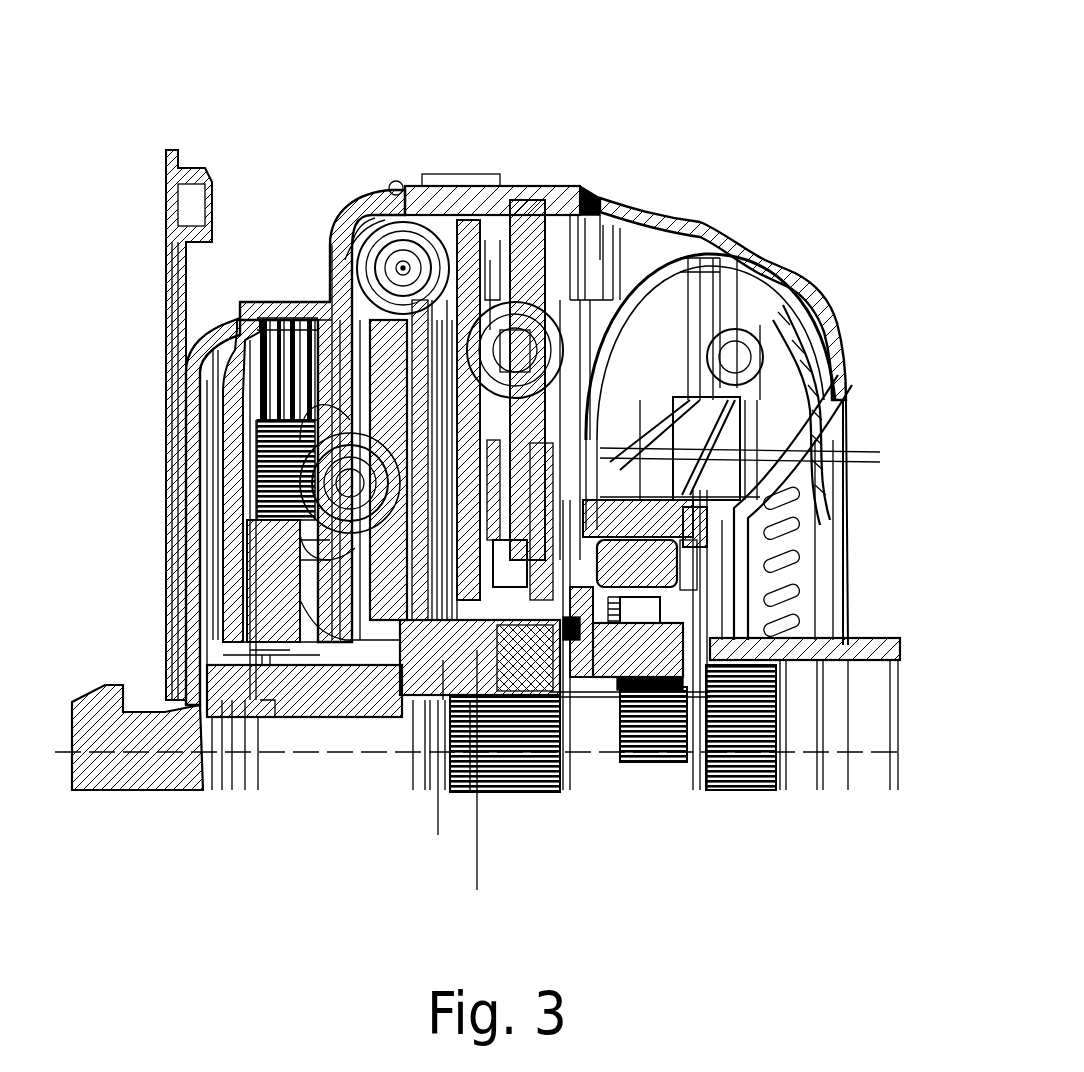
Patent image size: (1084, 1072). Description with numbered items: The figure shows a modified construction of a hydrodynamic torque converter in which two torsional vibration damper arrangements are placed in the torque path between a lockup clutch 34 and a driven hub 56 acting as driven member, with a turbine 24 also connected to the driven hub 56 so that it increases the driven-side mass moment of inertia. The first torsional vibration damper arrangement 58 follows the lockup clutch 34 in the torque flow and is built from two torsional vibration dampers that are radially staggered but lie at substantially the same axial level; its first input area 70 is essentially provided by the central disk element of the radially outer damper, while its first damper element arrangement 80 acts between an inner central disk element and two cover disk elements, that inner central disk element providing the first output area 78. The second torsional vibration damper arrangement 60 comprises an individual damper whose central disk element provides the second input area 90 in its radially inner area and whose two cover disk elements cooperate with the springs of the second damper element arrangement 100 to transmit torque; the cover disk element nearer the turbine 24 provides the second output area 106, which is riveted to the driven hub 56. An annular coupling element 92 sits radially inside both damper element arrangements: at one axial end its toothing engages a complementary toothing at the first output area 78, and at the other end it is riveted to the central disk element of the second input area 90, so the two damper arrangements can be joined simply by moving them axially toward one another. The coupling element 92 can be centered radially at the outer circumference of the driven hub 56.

The turbine 24 is at (705, 282).
The lockup clutch 34 is at (171, 347).
The driven hub 56 is at (515, 780).
The first torsional vibration damper arrangement 58 is at (350, 176).
The second torsional vibration damper arrangement 60 is at (562, 225).
The first input area 70 is at (356, 304).
The first output area 78 is at (438, 766).
The first damper element arrangement 80 is at (440, 380).
The second input area 90 is at (508, 668).
The coupling element 92 is at (478, 787).
The second damper element arrangement 100 is at (760, 350).
The second output area 106 is at (800, 527).